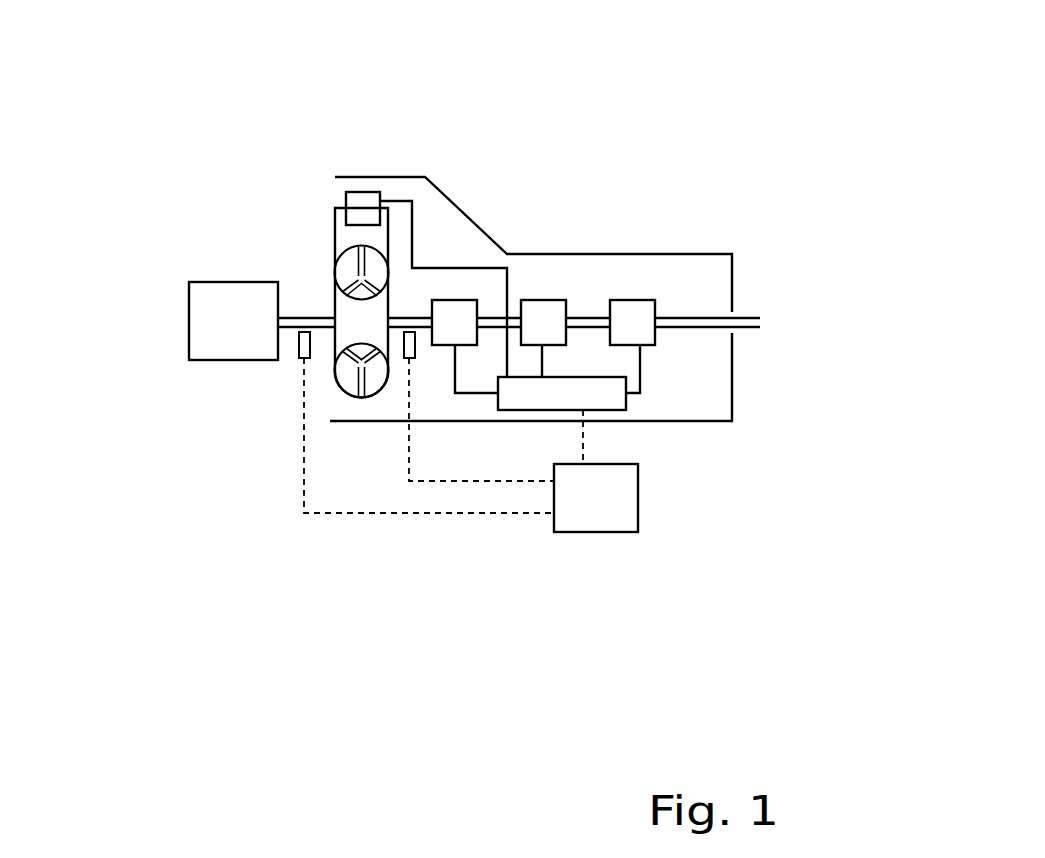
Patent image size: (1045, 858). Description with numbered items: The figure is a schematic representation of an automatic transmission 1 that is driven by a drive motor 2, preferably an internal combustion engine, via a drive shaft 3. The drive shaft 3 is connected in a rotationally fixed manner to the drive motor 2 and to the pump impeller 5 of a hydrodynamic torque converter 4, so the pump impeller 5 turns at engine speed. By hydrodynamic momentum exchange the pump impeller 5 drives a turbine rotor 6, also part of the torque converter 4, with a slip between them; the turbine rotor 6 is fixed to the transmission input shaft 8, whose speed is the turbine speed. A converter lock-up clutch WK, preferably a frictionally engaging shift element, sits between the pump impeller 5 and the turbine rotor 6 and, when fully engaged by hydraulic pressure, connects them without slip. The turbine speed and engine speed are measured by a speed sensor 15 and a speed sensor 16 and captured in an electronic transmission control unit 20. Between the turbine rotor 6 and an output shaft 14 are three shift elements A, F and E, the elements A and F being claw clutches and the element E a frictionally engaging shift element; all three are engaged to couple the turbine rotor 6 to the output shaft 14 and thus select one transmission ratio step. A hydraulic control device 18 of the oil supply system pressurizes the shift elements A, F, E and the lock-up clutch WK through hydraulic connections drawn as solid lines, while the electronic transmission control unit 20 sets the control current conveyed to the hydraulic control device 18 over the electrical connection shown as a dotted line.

The automatic transmission 1 is at (713, 157).
The drive motor 2 is at (213, 287).
The drive shaft 3 is at (306, 318).
The hydrodynamic torque converter 4 is at (332, 200).
The pump impeller 5 is at (348, 375).
The turbine rotor 6 is at (373, 378).
The transmission input shaft 8 is at (410, 318).
The output shaft 14 is at (743, 323).
The speed sensor 15 is at (298, 358).
The speed sensor 16 is at (412, 358).
The hydraulic control device 18 is at (547, 410).
The electronic transmission control unit 20 is at (590, 532).
The converter lock-up clutch WK is at (362, 208).
The shift element A is at (455, 320).
The shift element F is at (540, 320).
The shift element E is at (629, 320).